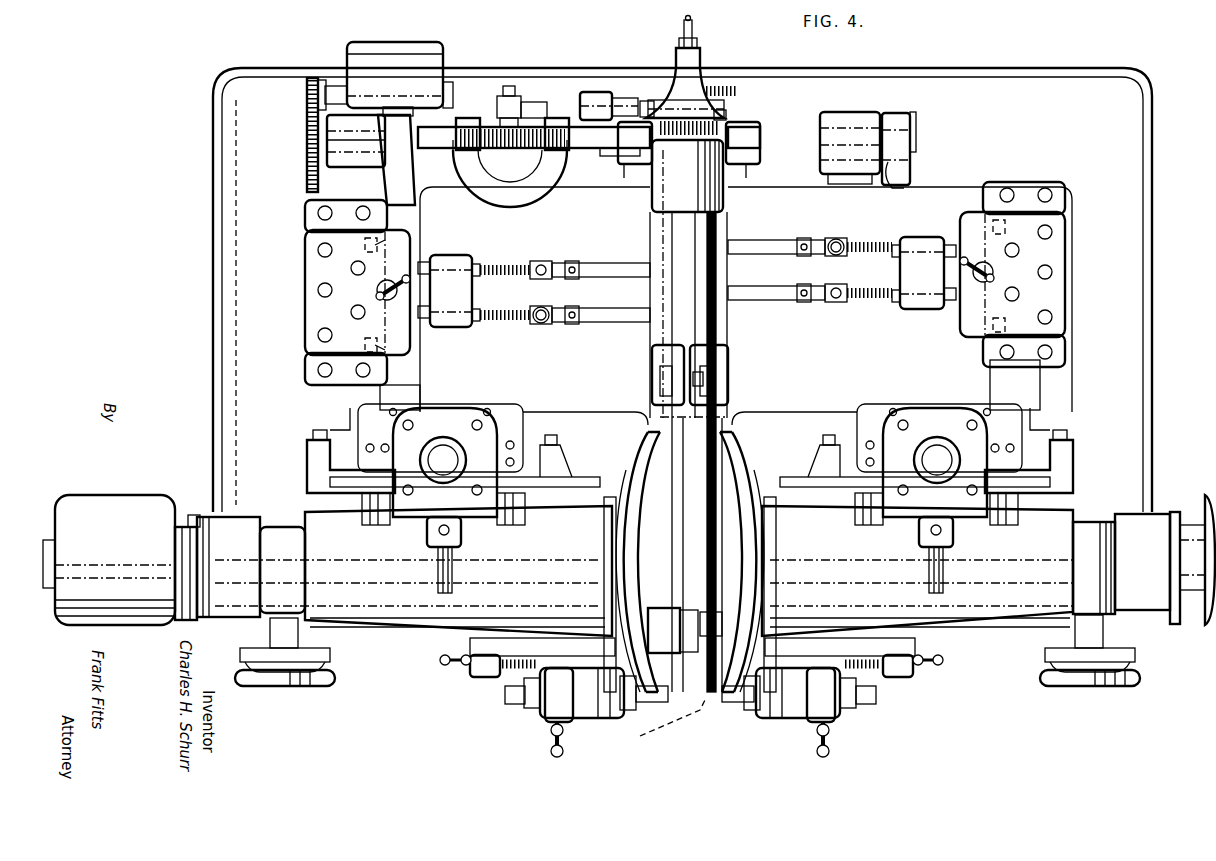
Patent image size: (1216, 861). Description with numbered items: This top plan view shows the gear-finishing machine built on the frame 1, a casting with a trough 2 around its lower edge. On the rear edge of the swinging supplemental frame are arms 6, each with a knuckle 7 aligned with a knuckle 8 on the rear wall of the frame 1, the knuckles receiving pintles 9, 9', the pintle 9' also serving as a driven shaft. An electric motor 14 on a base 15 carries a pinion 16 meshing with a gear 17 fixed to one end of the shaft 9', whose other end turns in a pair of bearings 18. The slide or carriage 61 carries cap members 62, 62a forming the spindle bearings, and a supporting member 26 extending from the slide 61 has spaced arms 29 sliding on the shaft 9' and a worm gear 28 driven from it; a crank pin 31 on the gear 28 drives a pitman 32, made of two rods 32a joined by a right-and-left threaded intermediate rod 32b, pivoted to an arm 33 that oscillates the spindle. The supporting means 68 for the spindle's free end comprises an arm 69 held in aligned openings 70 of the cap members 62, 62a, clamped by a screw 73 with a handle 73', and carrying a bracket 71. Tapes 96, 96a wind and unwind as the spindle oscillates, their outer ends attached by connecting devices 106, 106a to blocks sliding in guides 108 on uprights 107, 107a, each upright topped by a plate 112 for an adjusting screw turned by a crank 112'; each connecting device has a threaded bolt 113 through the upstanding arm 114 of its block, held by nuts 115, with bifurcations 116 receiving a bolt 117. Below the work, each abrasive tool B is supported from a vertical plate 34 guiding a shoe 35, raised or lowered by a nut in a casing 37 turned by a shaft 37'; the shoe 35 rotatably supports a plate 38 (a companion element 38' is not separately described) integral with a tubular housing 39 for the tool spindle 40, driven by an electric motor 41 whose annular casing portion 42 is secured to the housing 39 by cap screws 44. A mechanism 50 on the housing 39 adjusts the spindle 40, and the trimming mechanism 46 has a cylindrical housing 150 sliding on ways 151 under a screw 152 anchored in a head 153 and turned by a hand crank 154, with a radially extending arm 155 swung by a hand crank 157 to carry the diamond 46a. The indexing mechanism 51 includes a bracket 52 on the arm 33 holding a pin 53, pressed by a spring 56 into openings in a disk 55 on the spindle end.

The frame 1 is at (691, 290).
The trough 2 is at (253, 302).
The arms 6 is at (641, 160).
The knuckle 7 is at (922, 140).
The knuckle 8 is at (850, 148).
The pintle 9 is at (927, 132).
The pintle or driven shaft 9' is at (589, 137).
The motor 14 is at (389, 75).
The base 15 is at (383, 147).
The pinion 16 is at (305, 99).
The gear 17 is at (306, 158).
The bearings 18 is at (689, 150).
The supporting member 26 is at (510, 175).
The worm gear 28 is at (483, 165).
The arms 29 is at (468, 118).
The crank pin 31 is at (497, 106).
The pitman 32 is at (609, 97).
The rods 32a is at (654, 67).
The intermediate rod 32b is at (610, 121).
The arm 33 is at (726, 113).
The vertical plate 34 is at (532, 470).
The shoe 35 is at (1064, 479).
The casing 37 is at (690, 460).
The shaft 37' is at (704, 555).
The plate 38 is at (690, 513).
The bearing 38' is at (690, 514).
The tubular member 39 is at (635, 571).
The tool spindle 40 is at (1139, 568).
The electric motor 41 is at (1204, 626).
The extended annular portion 42 is at (178, 553).
The cap screws 44 is at (190, 515).
The trimming mechanism 46 is at (690, 693).
The diamond 46a is at (672, 728).
The mechanism 50 is at (687, 650).
The indexing mechanism 51 is at (692, 80).
The bracket 52 is at (686, 102).
The pin 53 is at (697, 46).
The disk 55 is at (738, 91).
The spring 56 is at (680, 46).
The slide or carriage 61 is at (682, 294).
The cap member 62 is at (688, 410).
The cap member 62a is at (728, 363).
The supporting means 68 is at (725, 385).
The arm 69 is at (697, 452).
The aligned openings 70 is at (650, 204).
The bracket 71 is at (673, 630).
The screw 73 is at (671, 535).
The handle 73' is at (732, 503).
The tapes 96 is at (624, 258).
The tapes 96a is at (766, 250).
The connecting device 106 is at (482, 246).
The connecting device 106a is at (902, 246).
The upright 107 is at (357, 292).
The upright 107a is at (1012, 274).
The guides 108 is at (386, 300).
The plate 112 is at (720, 286).
The crank 112' is at (707, 295).
The screw threaded rod or bolt 113 is at (505, 278).
The upstanding arm 114 is at (924, 308).
The nuts 115 is at (462, 328).
The bifurcations 116 is at (536, 262).
The bolt 117 is at (533, 322).
The cylindrical housing 150 is at (582, 722).
The ways 151 is at (538, 632).
The screw 152 is at (500, 676).
The head 153 is at (470, 668).
The hand crank 154 is at (440, 660).
The radially extending arm 155 is at (642, 704).
The hand crank 157 is at (556, 758).
The tool B is at (660, 564).